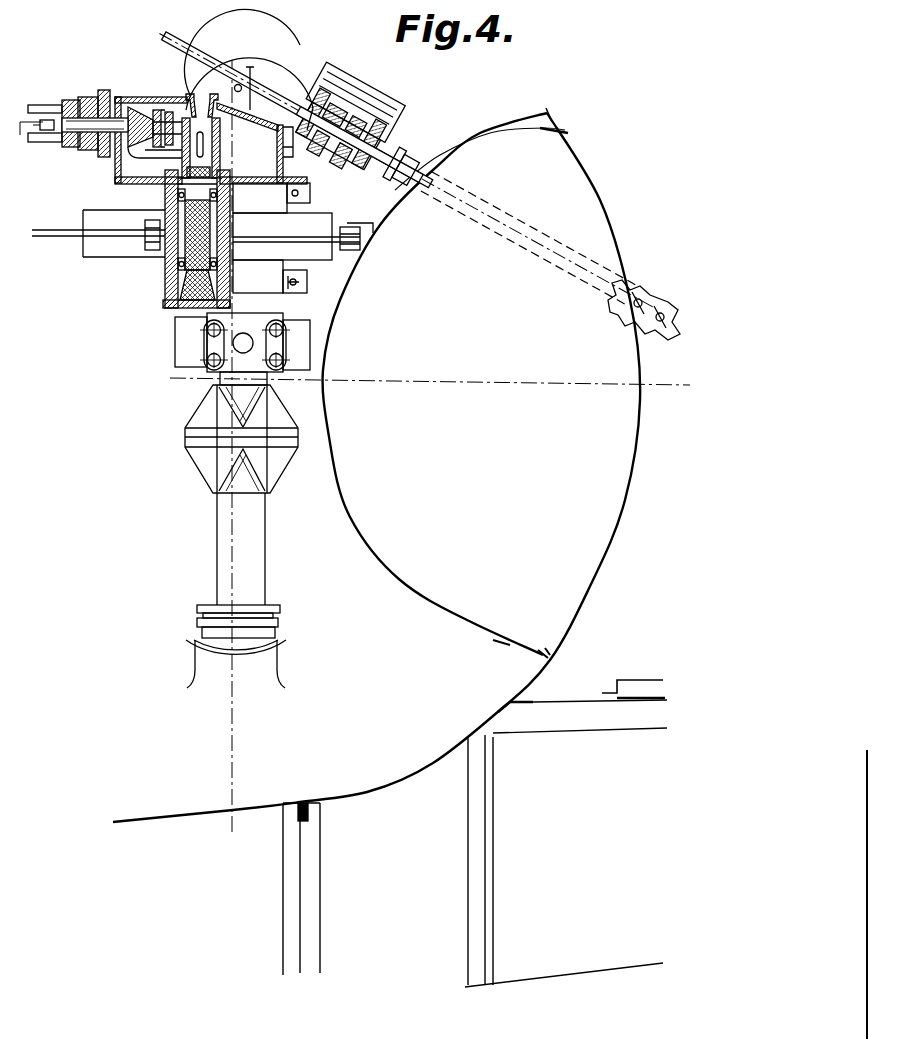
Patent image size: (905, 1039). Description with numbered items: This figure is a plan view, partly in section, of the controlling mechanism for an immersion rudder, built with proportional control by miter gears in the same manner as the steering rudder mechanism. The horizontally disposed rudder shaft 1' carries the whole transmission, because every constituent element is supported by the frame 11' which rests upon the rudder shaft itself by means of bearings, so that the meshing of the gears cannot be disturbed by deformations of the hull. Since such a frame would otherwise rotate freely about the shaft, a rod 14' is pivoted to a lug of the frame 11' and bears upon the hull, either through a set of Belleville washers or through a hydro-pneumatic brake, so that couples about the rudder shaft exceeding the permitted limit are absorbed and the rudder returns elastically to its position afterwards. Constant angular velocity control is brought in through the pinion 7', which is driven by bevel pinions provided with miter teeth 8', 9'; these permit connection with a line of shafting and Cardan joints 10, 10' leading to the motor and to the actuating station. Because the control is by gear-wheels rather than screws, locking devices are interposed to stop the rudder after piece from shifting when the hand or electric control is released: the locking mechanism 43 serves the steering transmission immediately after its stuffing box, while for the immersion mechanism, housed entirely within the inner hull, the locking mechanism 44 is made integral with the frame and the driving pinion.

The line of shafting and Cardan joints 10 is at (406, 167).
The locking mechanism 43 is at (367, 122).
The bevel pinion with miter teeth 8' is at (241, 88).
The bevel pinion with miter teeth 9' is at (145, 107).
The locking mechanism 44 is at (72, 100).
The Cardan joint shafting 10' is at (35, 133).
The pinion 7' is at (173, 239).
The frame 11' is at (286, 246).
The rod 14' is at (200, 229).
The rudder shaft 1' is at (236, 590).